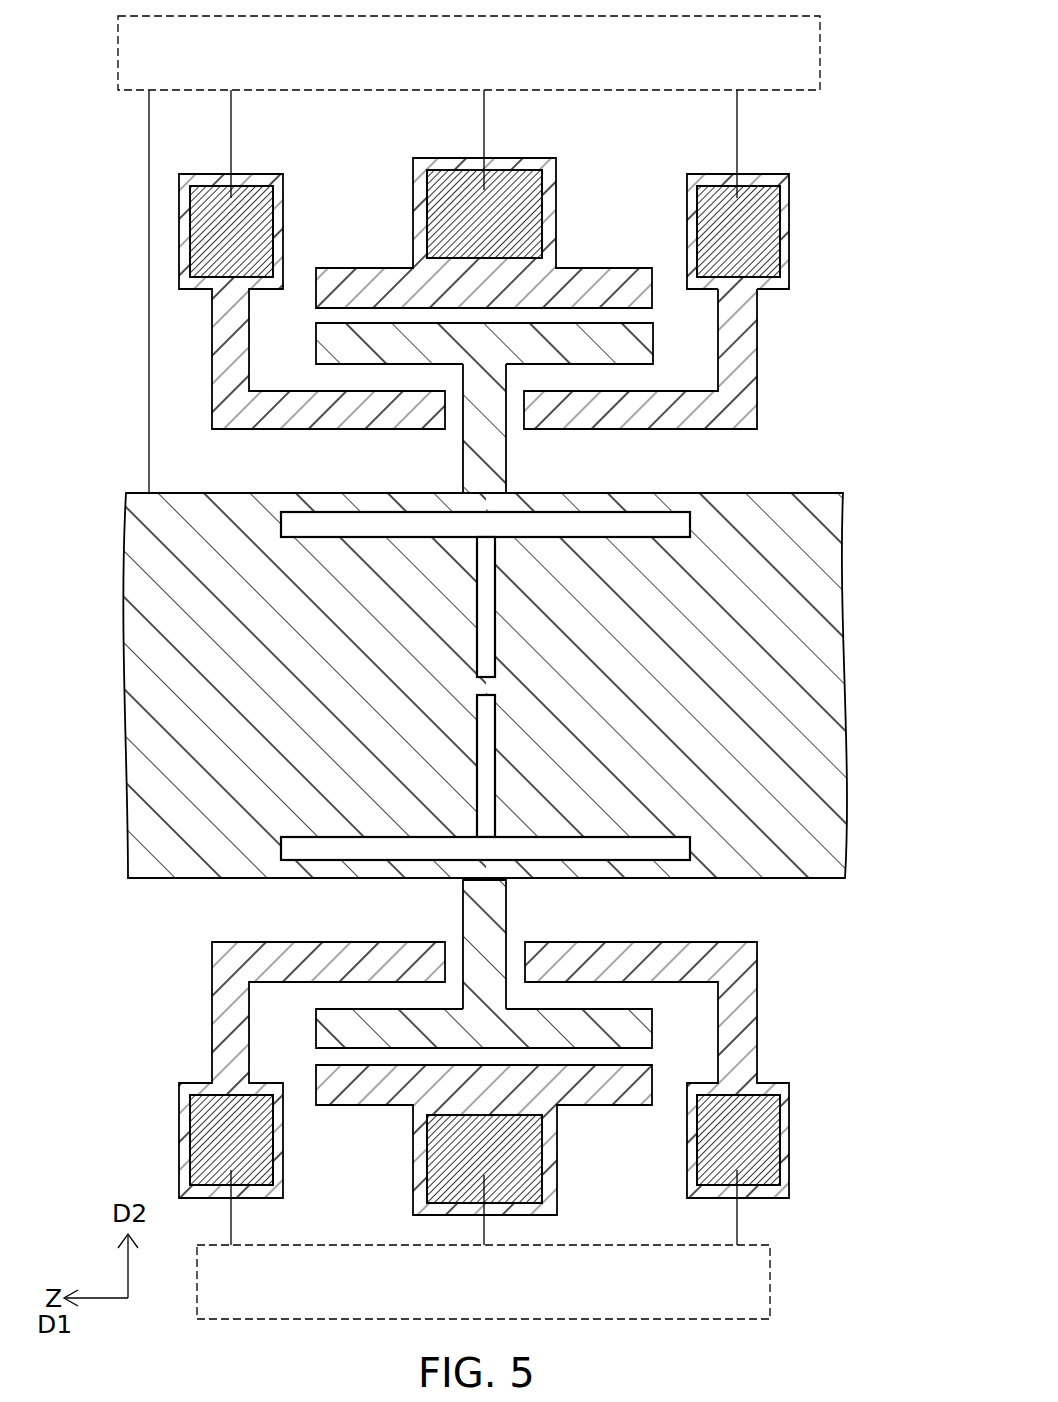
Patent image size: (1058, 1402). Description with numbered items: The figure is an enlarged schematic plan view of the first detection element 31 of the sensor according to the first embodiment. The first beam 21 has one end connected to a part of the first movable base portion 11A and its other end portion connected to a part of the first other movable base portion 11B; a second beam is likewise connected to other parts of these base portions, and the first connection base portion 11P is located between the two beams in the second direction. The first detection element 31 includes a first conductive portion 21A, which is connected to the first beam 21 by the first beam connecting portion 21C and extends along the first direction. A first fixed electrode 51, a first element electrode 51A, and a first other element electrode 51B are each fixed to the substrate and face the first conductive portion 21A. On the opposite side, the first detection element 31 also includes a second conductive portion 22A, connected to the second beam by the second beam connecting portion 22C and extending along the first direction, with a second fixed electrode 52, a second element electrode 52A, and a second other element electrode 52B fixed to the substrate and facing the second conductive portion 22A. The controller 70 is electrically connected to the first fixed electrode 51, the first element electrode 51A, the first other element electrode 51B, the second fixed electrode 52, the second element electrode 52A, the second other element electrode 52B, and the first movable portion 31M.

The controller 70 is at (823, 40).
The first movable base portion 11A is at (143, 508).
The first other movable base portion 11B is at (792, 515).
The first connection base portion 11P is at (490, 692).
The first detection element 31 is at (804, 207).
The first movable portion 31M is at (830, 274).
The first fixed electrode 51 is at (584, 290).
The first element electrode 51A is at (313, 408).
The first other element electrode 51B is at (648, 413).
The first beam 21 is at (574, 413).
The first conductive portion 21A is at (630, 345).
The first beam connecting portion 21C is at (487, 430).
The second conductive portion 22A is at (503, 882).
The second beam connecting portion 22C is at (482, 932).
The second fixed electrode 52 is at (568, 1080).
The second element electrode 52A is at (300, 960).
The second other element electrode 52B is at (643, 953).